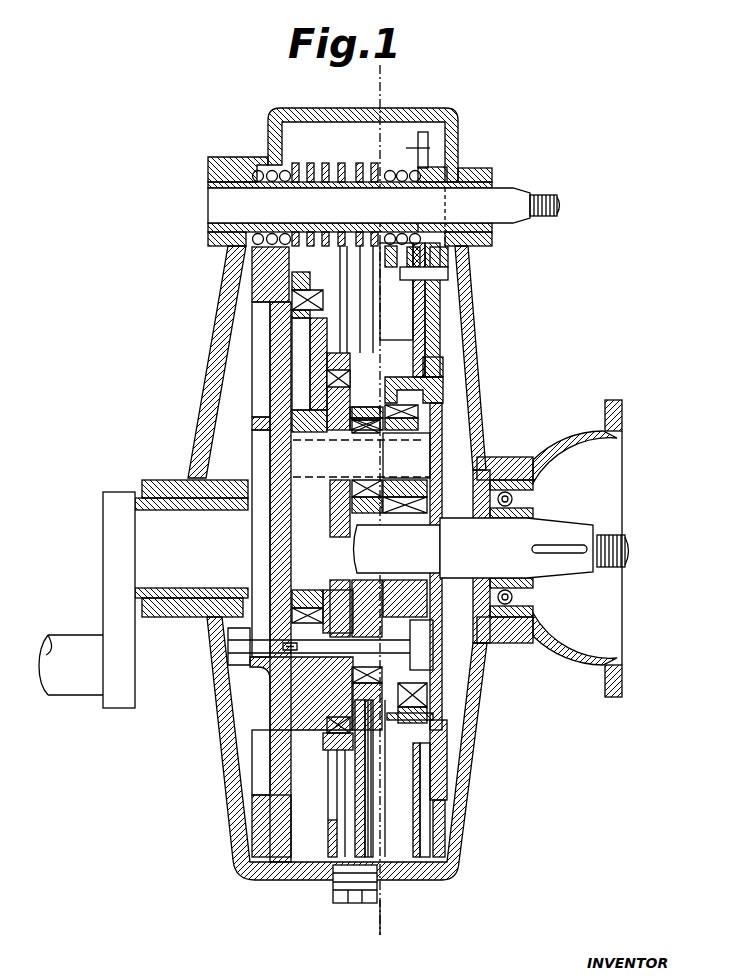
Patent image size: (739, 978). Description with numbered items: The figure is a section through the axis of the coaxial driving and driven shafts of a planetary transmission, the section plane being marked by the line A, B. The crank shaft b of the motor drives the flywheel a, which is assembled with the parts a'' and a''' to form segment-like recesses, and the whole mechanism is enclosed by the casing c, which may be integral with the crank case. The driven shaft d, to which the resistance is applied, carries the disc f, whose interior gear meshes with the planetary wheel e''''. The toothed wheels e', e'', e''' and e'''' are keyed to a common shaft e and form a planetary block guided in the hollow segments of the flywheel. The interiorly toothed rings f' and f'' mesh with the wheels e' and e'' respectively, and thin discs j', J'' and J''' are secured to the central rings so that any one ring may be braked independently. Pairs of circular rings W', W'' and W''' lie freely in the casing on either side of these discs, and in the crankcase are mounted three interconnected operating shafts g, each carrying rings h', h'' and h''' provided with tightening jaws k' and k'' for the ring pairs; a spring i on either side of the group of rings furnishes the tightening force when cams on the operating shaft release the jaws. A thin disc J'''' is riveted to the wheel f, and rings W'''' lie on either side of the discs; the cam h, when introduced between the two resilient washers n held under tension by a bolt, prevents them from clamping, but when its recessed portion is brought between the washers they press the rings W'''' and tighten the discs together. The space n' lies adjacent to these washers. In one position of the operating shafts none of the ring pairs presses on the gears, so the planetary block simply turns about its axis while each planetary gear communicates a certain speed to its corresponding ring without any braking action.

The section line A is at (392, 500).
The section line B is at (382, 929).
The spring i is at (258, 172).
The operating shaft g is at (506, 188).
The cam h is at (417, 182).
The ring h' is at (335, 191).
The ring h'' is at (365, 191).
The ring h''' is at (309, 191).
The tightening jaw k' is at (414, 227).
The tightening jaw k'' is at (345, 359).
The casing c is at (200, 420).
The thin disc j' is at (466, 444).
The crank shaft b is at (103, 573).
The thin disc J''' is at (236, 274).
The flywheel a is at (285, 582).
The circular rings W''' is at (276, 853).
The toothed wheel e'' is at (275, 367).
The thin disc J'' is at (238, 374).
The interiorly toothed ring f'' is at (356, 299).
The toothed wheel e' is at (365, 434).
The cavity n' is at (396, 291).
The thin disc J'''' is at (464, 550).
The resilient washer n is at (448, 263).
The flywheel part a''' is at (412, 357).
The interiorly toothed ring f' is at (376, 393).
The toothed wheel e'''' is at (455, 428).
The common shaft e is at (423, 566).
The disc f is at (396, 555).
The driven shaft d is at (553, 532).
The toothed wheel e''' is at (281, 593).
The flywheel part a'' is at (378, 748).
The circular rings W' is at (393, 810).
The rings W'''' is at (467, 815).
The circular rings W'' is at (346, 910).